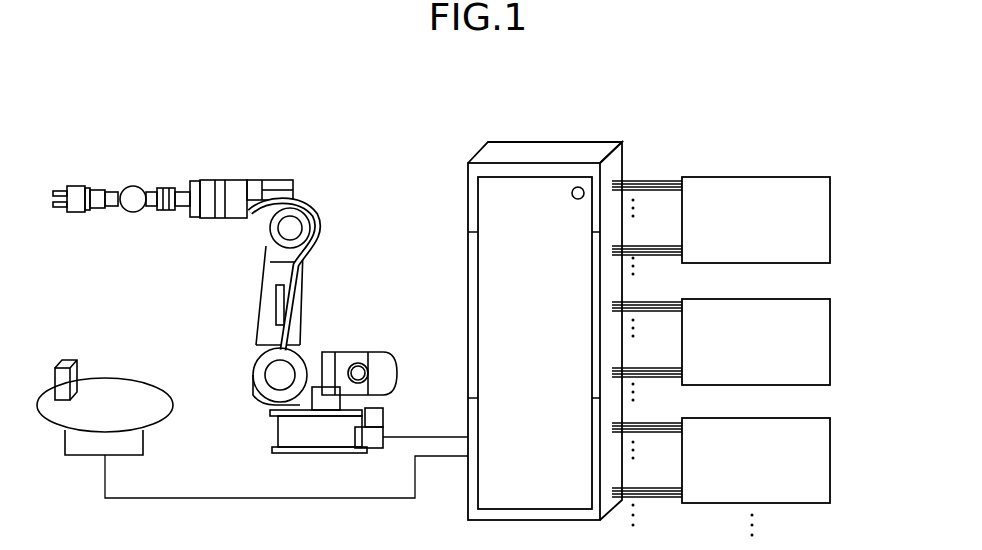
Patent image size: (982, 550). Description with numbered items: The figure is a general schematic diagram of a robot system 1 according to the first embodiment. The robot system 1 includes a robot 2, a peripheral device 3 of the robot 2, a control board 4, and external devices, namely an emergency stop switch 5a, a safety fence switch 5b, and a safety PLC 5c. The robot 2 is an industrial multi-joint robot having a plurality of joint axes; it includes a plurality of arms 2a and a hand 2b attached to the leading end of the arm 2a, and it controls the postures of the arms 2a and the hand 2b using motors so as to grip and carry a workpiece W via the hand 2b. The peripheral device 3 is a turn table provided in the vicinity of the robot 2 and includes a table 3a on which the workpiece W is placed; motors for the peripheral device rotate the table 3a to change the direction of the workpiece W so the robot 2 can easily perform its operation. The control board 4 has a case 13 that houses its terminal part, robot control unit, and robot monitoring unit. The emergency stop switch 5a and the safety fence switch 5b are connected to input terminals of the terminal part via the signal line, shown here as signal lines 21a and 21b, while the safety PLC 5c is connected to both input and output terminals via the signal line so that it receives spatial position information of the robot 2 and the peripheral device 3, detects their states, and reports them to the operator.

The robot system 1 is at (399, 109).
The robot 2 is at (282, 168).
The arms 2a is at (227, 210).
The hand 2b is at (78, 186).
The peripheral device 3 is at (133, 365).
The table 3a is at (158, 408).
The workpiece W is at (73, 360).
The control board 4 is at (578, 132).
The case 13 is at (521, 142).
The signal line 21a is at (646, 246).
The signal line 21b is at (646, 181).
The emergency stop switch 5a is at (830, 220).
The safety fence switch 5b is at (830, 341).
The safety PLC 5c is at (830, 460).